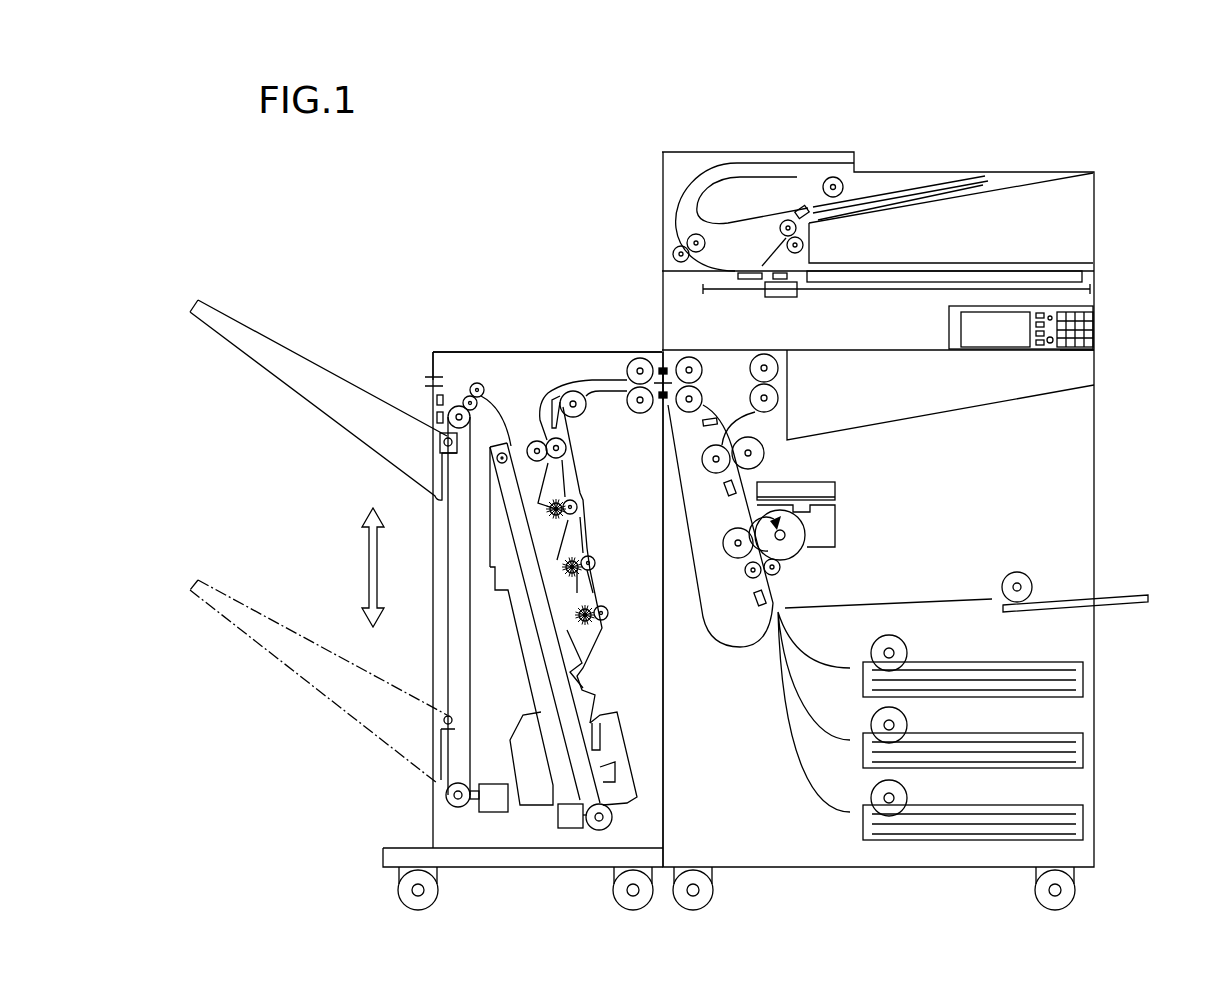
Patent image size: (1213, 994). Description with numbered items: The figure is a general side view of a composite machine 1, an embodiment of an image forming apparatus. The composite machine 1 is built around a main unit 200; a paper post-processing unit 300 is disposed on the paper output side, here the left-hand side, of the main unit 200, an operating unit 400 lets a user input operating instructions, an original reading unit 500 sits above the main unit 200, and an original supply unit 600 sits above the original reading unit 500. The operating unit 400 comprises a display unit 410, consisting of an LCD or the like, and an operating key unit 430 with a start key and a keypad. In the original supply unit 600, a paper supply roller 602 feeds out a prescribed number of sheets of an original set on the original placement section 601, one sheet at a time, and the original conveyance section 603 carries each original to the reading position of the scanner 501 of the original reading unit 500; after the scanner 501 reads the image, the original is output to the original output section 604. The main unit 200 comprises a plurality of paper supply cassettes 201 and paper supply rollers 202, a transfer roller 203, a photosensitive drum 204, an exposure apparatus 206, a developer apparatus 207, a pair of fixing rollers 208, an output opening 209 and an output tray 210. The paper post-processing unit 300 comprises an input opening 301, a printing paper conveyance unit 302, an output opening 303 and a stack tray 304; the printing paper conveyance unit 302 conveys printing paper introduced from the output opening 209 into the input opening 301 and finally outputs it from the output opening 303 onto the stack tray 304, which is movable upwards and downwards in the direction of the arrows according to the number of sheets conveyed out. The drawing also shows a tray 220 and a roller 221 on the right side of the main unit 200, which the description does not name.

The composite machine 1 is at (541, 164).
The main unit 200 is at (1067, 515).
The paper supply cassettes 201 is at (1082, 672).
The paper supply rollers 202 is at (907, 656).
The transfer roller 203 is at (738, 558).
The photosensitive drum 204 is at (797, 548).
The exposure apparatus 206 is at (835, 486).
The developer apparatus 207 is at (835, 524).
The pair of fixing rollers 208 is at (712, 472).
The output opening 209 is at (690, 357).
The output tray 210 is at (950, 411).
The manual feed tray 220 is at (1122, 605).
The manual feed roller 221 is at (1017, 572).
The paper post-processing unit 300 is at (497, 347).
The input opening 301 is at (645, 342).
The printing paper conveyance unit 302 is at (573, 382).
The output opening 303 is at (425, 377).
The stack tray 304 is at (355, 445).
The operating unit 400 is at (1097, 328).
The display unit 410 is at (958, 333).
The operating key unit 430 is at (1072, 353).
The original reading unit 500 is at (1097, 273).
The scanner 501 is at (787, 294).
The original supply unit 600 is at (920, 170).
The original placement section 601 is at (1020, 178).
The paper supply roller 602 is at (842, 181).
The original conveyance section 603 is at (727, 221).
The original output section 604 is at (965, 262).